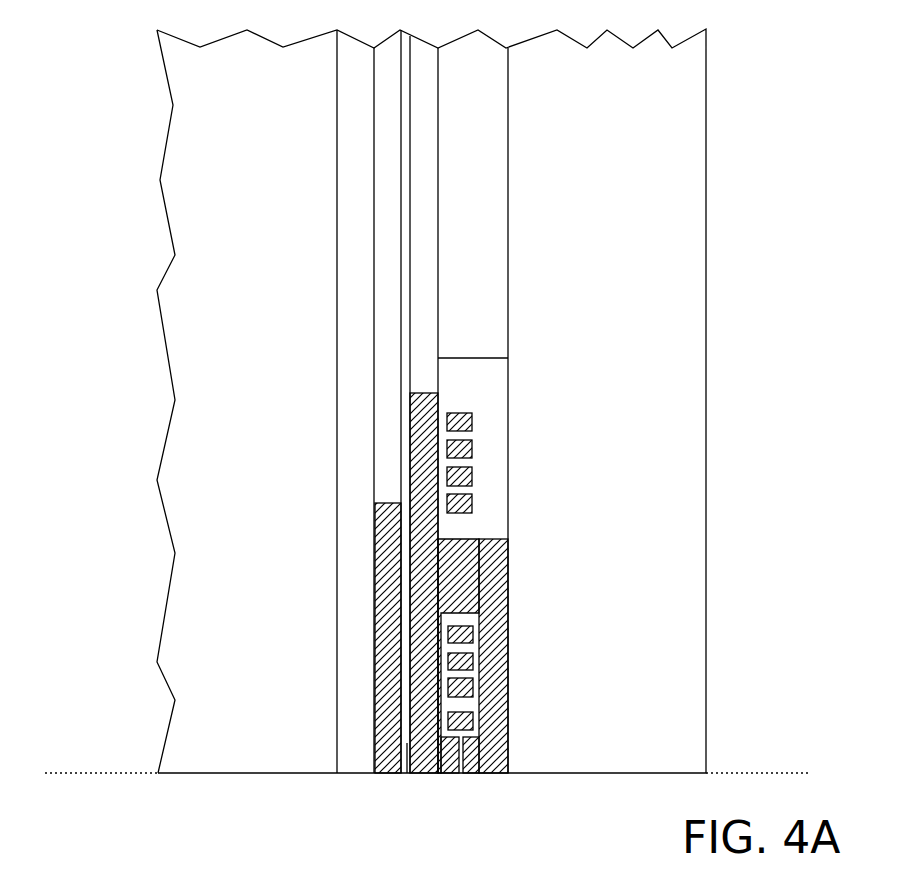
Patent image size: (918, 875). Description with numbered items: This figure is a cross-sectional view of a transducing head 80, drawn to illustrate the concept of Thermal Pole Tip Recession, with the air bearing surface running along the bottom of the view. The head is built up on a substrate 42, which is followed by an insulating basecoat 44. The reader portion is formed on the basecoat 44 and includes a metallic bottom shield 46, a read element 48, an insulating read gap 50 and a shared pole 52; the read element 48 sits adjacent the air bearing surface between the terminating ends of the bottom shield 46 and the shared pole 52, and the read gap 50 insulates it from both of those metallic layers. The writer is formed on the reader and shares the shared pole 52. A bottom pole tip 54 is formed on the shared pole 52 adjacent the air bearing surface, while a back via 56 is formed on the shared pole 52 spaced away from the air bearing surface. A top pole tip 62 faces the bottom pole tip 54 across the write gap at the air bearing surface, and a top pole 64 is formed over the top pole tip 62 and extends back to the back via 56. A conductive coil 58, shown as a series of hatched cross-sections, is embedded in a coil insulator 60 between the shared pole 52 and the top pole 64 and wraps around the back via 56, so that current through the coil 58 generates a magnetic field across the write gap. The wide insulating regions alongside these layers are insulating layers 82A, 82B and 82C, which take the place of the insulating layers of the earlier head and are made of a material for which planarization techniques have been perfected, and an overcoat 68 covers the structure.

The substrate 42 is at (217, 685).
The basecoat 44 is at (352, 728).
The bottom shield 46 is at (390, 693).
The read element 48 is at (403, 775).
The read gap 50 is at (408, 643).
The shared pole 52 is at (422, 600).
The bottom pole tip 54 is at (448, 757).
The back via 56 is at (462, 573).
The conductive coil 58 is at (507, 539).
The coil insulator 60 is at (485, 458).
The top pole tip 62 is at (470, 760).
The top pole 64 is at (488, 728).
The overcoat 68 is at (610, 665).
The transducing head 80 is at (792, 44).
The insulating layer 82A is at (388, 286).
The insulating layer 82B is at (430, 243).
The insulating layer 82C is at (470, 303).